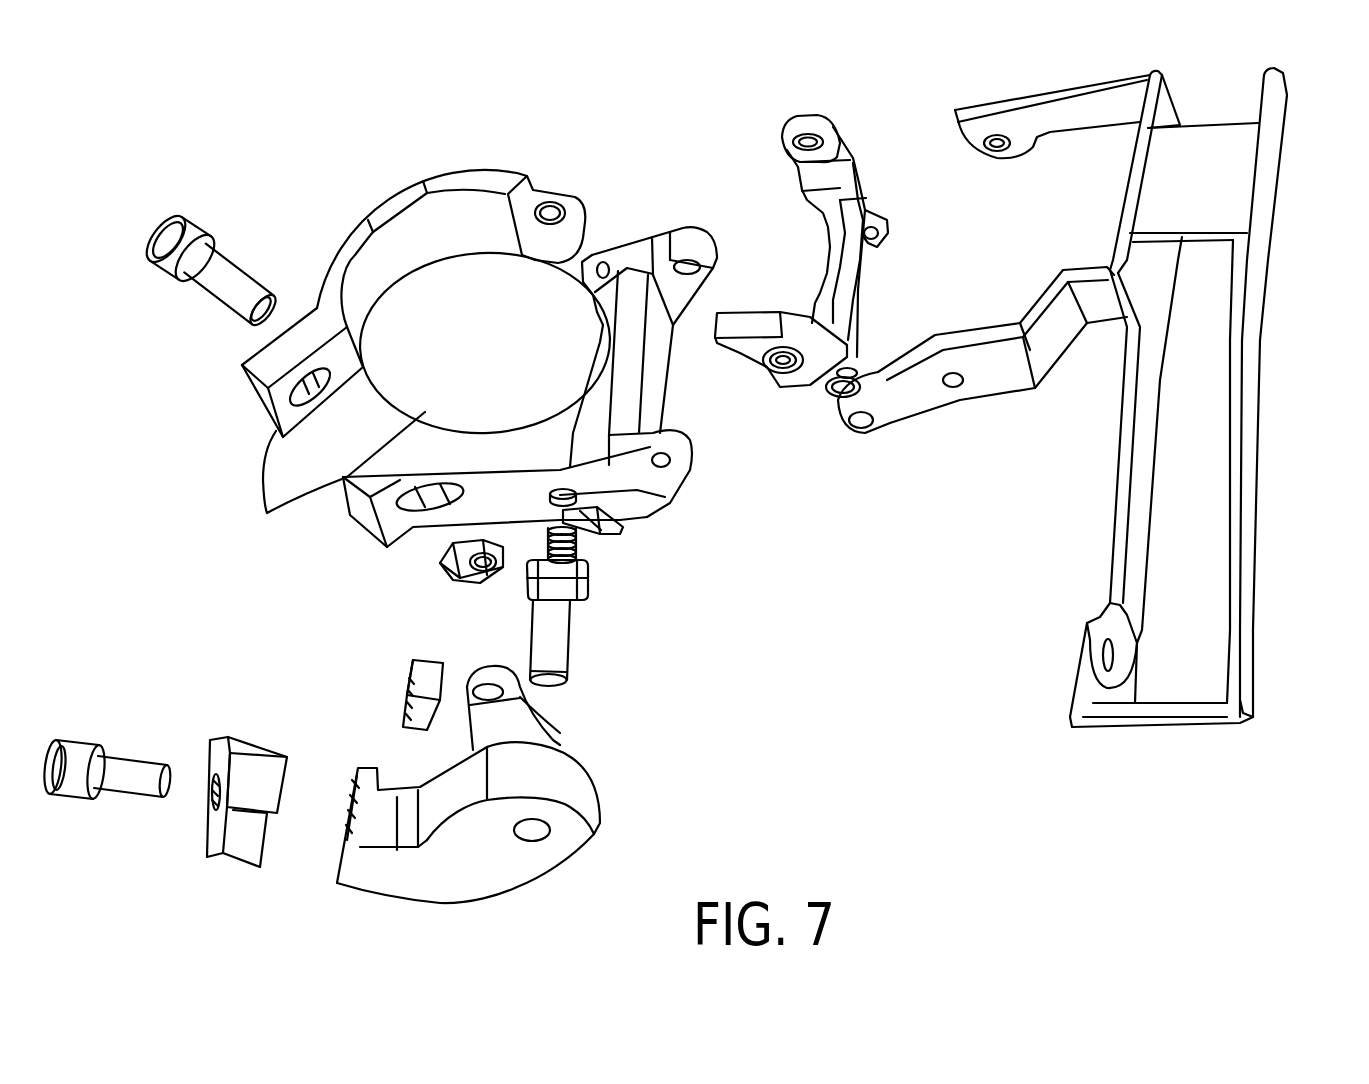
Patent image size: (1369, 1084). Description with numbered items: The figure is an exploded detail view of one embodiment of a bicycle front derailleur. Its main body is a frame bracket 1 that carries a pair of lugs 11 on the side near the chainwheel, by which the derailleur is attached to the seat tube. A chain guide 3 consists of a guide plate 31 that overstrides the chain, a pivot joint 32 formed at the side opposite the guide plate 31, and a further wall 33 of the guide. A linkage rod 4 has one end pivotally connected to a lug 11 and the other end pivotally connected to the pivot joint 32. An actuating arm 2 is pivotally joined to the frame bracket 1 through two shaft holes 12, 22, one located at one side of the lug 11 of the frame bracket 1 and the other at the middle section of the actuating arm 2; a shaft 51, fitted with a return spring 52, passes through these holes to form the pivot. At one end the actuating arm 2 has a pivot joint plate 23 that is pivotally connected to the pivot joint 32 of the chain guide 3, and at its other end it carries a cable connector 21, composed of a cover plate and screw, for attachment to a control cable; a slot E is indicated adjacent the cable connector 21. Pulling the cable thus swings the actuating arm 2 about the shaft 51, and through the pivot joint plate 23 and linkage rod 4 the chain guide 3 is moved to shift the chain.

The frame bracket 1 is at (267, 513).
The lugs 11 is at (687, 230).
The shaft hole 12 is at (665, 496).
The actuating arm 2 is at (499, 755).
The cable connector 21 is at (153, 763).
The shaft hole 22 is at (550, 830).
The pivot joint plate 23 is at (486, 688).
The chain guide 3 is at (1089, 397).
The guide plate 31 is at (1135, 572).
The pivot joint 32 is at (1040, 132).
The right side wall 33 is at (1237, 517).
The linkage rod 4 is at (843, 203).
The shaft 51 is at (557, 641).
The return spring 52 is at (580, 538).
The slot E is at (283, 820).